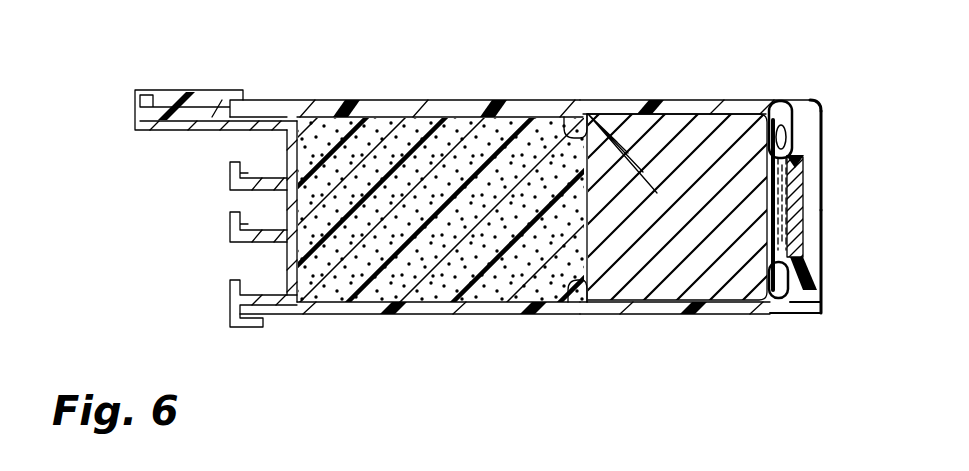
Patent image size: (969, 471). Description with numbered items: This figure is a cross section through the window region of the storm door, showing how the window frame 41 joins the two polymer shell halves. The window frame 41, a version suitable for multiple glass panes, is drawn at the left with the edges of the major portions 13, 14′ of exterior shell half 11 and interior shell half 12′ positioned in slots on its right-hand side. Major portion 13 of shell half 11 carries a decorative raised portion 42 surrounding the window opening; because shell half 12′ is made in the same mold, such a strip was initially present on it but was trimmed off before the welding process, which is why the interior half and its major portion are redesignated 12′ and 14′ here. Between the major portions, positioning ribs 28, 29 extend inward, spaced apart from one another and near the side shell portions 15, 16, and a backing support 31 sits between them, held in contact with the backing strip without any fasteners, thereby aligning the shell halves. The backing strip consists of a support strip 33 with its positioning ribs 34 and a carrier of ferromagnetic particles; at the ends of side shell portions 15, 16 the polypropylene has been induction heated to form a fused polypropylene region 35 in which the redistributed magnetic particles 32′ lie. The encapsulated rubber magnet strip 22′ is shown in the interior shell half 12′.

The exterior polymer material shell half 11 is at (352, 100).
The interior polymer material shell half 12′ is at (436, 317).
The major shell portion 13 is at (622, 100).
The major shell portion 14′ is at (657, 317).
The side shell portions 15 is at (826, 128).
The side shell portions 16 is at (824, 262).
The rubber magnet strip 22′ is at (800, 308).
The positioning rib 28 is at (571, 141).
The positioning rib 29 is at (776, 110).
The backing support 31 is at (588, 207).
The magnetic particles 32′ is at (812, 215).
The support strip 33 is at (816, 107).
The positioning ribs 34 is at (748, 155).
The fused polypropylene region 35 is at (818, 172).
The window frame 41 is at (232, 222).
The decorative raised portion 42 is at (183, 97).